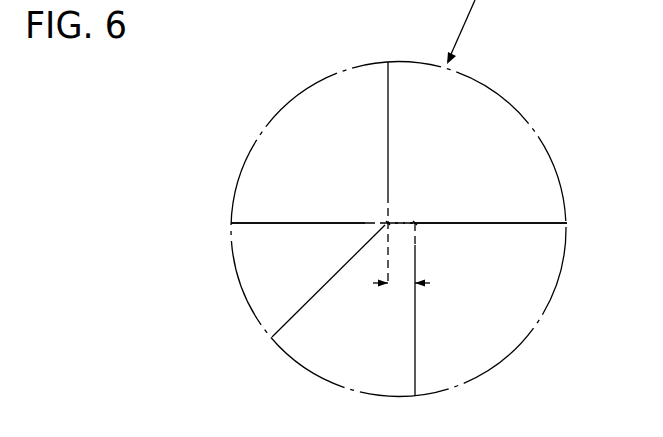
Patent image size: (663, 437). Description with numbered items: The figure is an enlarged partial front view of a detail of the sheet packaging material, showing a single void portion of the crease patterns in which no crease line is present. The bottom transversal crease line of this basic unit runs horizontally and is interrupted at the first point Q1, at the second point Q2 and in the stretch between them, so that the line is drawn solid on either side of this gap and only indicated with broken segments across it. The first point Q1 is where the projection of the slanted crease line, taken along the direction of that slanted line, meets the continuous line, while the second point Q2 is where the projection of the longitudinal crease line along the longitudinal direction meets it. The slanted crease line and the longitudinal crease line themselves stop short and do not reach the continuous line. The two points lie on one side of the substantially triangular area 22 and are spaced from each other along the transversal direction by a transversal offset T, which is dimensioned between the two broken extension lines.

The triangular area 22 is at (262, 258).
The first point Q1 is at (388, 222).
The second point Q2 is at (415, 222).
The transversal offset T is at (401, 275).